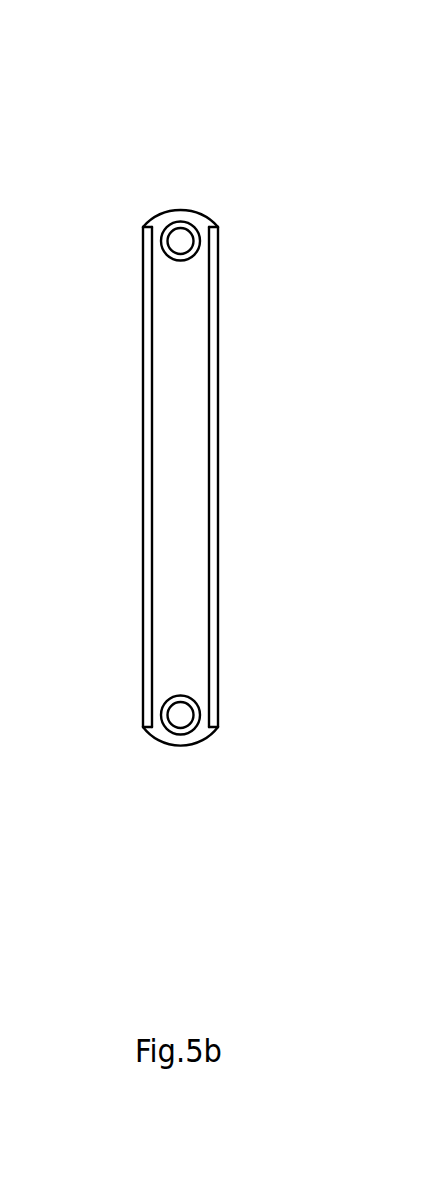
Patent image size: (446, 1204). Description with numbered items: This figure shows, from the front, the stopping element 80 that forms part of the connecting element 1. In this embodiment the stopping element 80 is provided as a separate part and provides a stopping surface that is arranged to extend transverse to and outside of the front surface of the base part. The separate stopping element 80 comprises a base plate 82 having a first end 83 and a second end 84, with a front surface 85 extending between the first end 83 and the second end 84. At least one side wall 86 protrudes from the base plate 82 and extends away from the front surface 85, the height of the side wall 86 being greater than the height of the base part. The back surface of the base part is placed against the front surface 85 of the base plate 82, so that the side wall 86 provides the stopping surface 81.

The connecting element 1 is at (166, 147).
The stopping element 80 is at (205, 180).
The stopping surface 81 is at (153, 378).
The base plate 82 is at (190, 353).
The first end 83 is at (172, 214).
The second end 84 is at (190, 747).
The front surface 85 is at (161, 468).
The side wall 86 is at (150, 418).